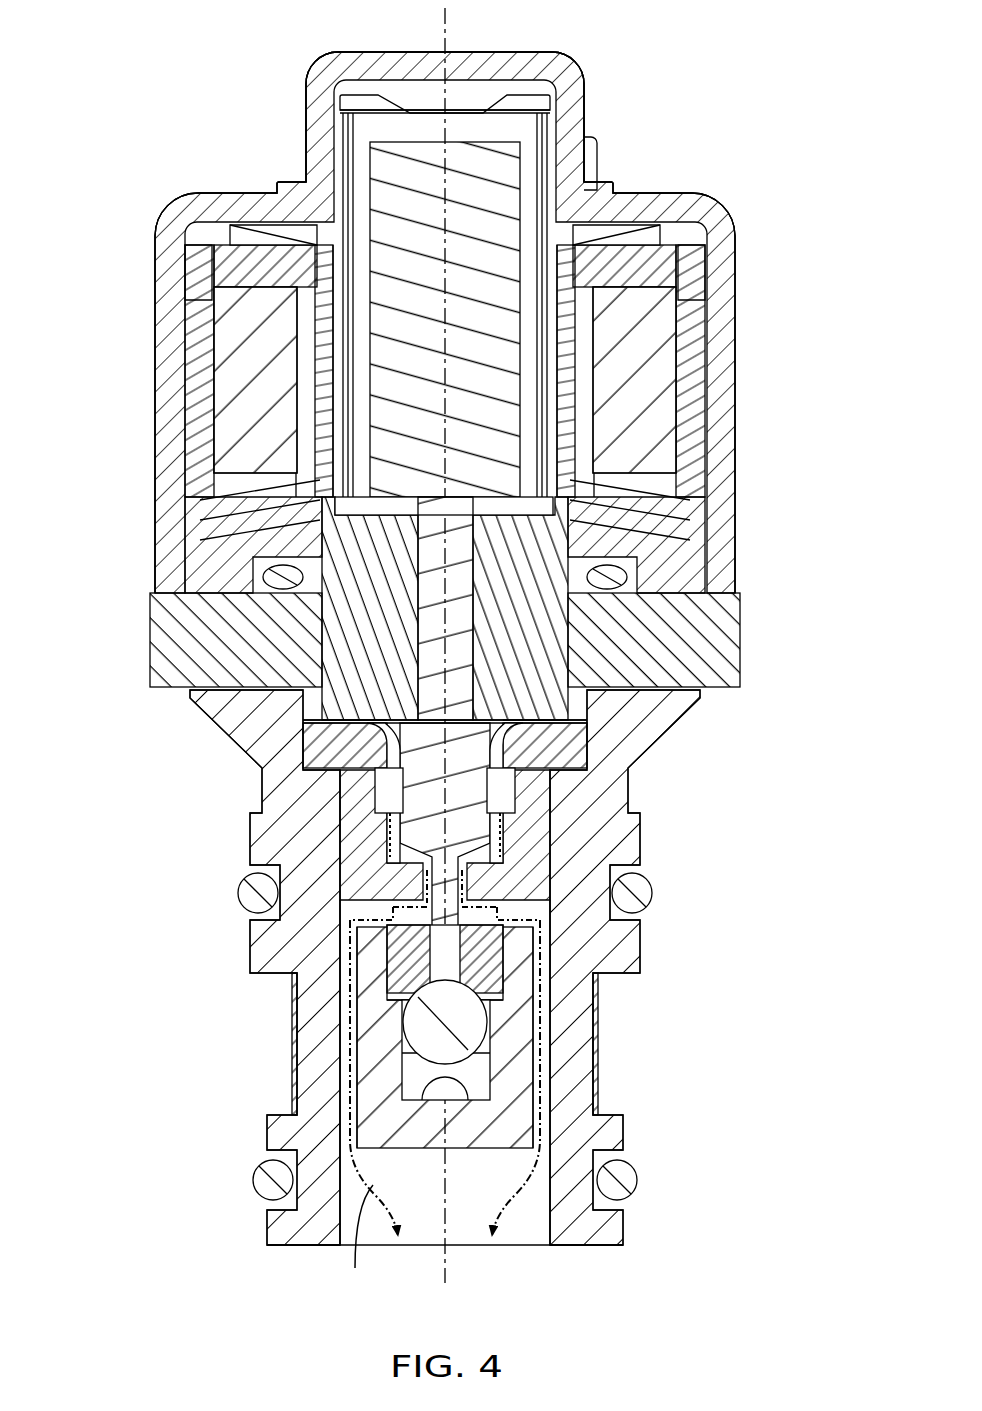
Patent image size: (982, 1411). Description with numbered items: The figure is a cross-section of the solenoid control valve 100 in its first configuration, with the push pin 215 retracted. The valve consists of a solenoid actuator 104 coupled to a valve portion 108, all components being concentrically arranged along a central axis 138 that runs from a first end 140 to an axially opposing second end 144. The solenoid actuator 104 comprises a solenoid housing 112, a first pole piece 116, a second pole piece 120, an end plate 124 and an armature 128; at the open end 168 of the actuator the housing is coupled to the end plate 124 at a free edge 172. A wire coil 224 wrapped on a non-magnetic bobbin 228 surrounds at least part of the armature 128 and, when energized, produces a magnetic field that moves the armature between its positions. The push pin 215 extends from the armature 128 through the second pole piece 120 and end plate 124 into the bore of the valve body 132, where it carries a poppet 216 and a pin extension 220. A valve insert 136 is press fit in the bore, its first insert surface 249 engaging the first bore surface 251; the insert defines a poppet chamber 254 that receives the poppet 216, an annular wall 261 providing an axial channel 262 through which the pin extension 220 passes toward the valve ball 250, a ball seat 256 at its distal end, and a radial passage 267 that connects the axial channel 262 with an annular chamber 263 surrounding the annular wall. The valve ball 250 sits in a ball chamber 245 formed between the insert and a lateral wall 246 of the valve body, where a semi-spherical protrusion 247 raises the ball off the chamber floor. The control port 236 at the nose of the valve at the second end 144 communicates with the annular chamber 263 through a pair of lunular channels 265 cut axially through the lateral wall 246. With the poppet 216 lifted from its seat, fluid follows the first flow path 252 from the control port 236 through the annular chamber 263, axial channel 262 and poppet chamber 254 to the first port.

The solenoid control valve 100 is at (157, 115).
The solenoid actuator 104 is at (753, 386).
The valve portion 108 is at (236, 1107).
The solenoid housing 112 is at (728, 463).
The first pole piece 116 is at (325, 293).
The second pole piece 120 is at (347, 663).
The end plate 124 is at (168, 622).
The armature 128 is at (495, 182).
The valve body 132 is at (307, 945).
The valve insert 136 is at (524, 872).
The central axis 138 is at (447, 36).
The first end 140 is at (708, 170).
The second end 144 is at (279, 1261).
The open end 168 is at (647, 607).
The free edge 172 is at (643, 598).
The push pin 215 is at (496, 699).
The poppet 216 is at (474, 803).
The pin extension 220 is at (455, 943).
The wire coil 224 is at (245, 372).
The bobbin 228 is at (300, 400).
The control port 236 is at (538, 1257).
The ball chamber 245 is at (495, 1053).
The lateral wall 246 is at (495, 1140).
The protrusion 247 is at (455, 1087).
The first insert surface 249 is at (500, 860).
The valve ball 250 is at (465, 1025).
The first bore surface 251 is at (556, 886).
The first flow path 252 is at (354, 1242).
The poppet chamber 254 is at (412, 813).
The ball seat 256 is at (402, 1000).
The annular wall 261 is at (393, 970).
The axial channel 262 is at (412, 880).
The annular chamber 263 is at (344, 963).
The lunular channels 265 is at (345, 1088).
The passage 267 is at (405, 908).